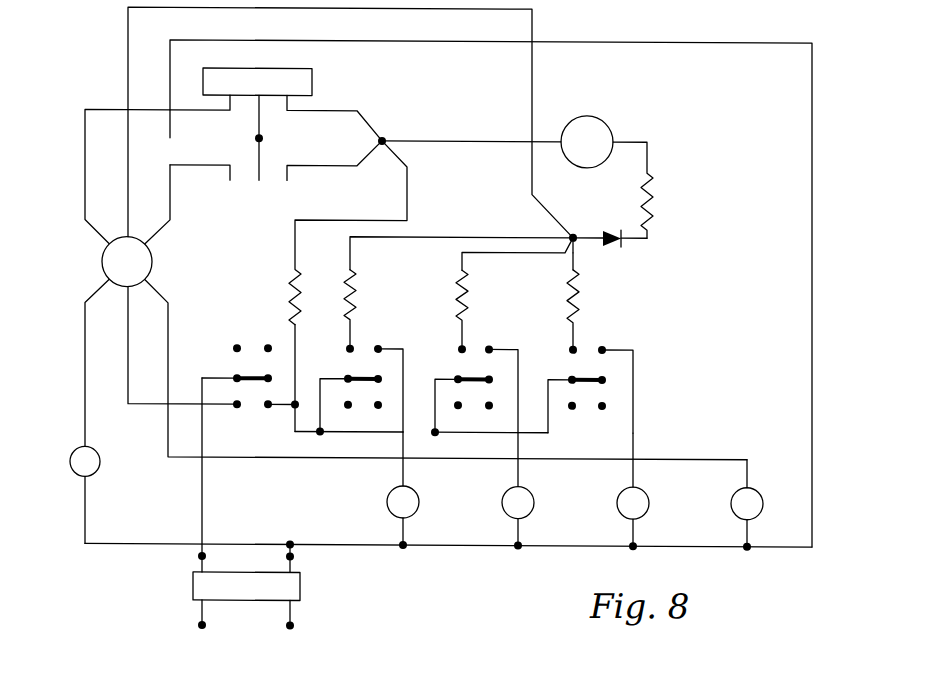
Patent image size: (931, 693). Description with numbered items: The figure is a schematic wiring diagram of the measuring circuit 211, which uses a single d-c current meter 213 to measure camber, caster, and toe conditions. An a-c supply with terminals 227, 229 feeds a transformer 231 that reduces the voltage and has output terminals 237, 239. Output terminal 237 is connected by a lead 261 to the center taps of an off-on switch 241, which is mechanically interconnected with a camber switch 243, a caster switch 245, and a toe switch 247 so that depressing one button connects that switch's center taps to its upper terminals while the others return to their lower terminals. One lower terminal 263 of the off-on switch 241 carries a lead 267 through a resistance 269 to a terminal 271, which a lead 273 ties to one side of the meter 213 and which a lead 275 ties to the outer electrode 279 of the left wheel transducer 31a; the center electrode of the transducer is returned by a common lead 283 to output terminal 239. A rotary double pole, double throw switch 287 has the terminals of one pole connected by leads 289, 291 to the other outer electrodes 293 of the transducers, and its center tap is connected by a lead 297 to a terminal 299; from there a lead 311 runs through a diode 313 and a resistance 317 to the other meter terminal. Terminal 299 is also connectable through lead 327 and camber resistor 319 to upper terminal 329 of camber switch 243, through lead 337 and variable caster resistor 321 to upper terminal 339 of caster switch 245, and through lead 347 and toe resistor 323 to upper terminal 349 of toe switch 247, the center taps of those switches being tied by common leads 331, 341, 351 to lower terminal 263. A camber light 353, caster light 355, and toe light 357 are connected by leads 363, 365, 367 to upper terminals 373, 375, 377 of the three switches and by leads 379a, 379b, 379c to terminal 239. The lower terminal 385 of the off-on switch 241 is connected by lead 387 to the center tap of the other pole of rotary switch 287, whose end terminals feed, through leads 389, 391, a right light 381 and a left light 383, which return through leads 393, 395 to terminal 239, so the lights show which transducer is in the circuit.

The circuit 211 is at (453, 559).
The d-c current meter 213 is at (601, 127).
The terminal 227 is at (202, 625).
The terminal 229 is at (294, 624).
The transformer 231 is at (265, 582).
The output terminal 237 is at (200, 555).
The output terminal 239 is at (294, 555).
The off-on switch 241 is at (255, 412).
The camber switch 243 is at (364, 418).
The caster switch 245 is at (474, 418).
The toe switch 247 is at (600, 414).
The lead 261 is at (202, 491).
The lower terminal 263 is at (268, 407).
The lead 267 is at (295, 331).
The resistance 269 is at (295, 276).
The terminal 271 is at (385, 136).
The lead 273 is at (504, 140).
The lead 275 is at (329, 110).
The outer electrode 279 is at (287, 104).
The conductor 283 is at (262, 39).
The rotary double pole, double throw switch 287 is at (96, 268).
The lead 289 is at (85, 178).
The lead 291 is at (170, 225).
The outer electrode 293 is at (228, 100).
The lead 297 is at (128, 48).
The terminal 299 is at (576, 233).
The lead 311 is at (582, 250).
The diode 313 is at (611, 246).
The resistance 317 is at (651, 193).
The camber resistor 319 is at (352, 287).
The caster resistor 321 is at (468, 285).
The toe resistor 323 is at (578, 300).
The lead 327 is at (411, 235).
The upper terminal 329 is at (352, 345).
The common lead 331 is at (320, 388).
The lead 337 is at (490, 250).
The upper terminal 339 is at (464, 345).
The common lead 341 is at (435, 388).
The lead 347 is at (572, 256).
The upper terminal 349 is at (575, 345).
The common lead 351 is at (548, 428).
The camber light 353 is at (387, 499).
The caster light 355 is at (534, 499).
The toe light 357 is at (649, 499).
The lead 363 is at (403, 466).
The lead 365 is at (518, 473).
The lead 367 is at (633, 471).
The upper terminal 373 is at (380, 345).
The upper terminal 375 is at (491, 345).
The upper terminal 377 is at (604, 345).
The lead 379a is at (403, 532).
The lead 379b is at (518, 543).
The lead 379c is at (633, 543).
The right light 381 is at (763, 499).
The left light 383 is at (74, 471).
The lower terminal 385 is at (237, 407).
The lead 387 is at (128, 324).
The lead 389 is at (168, 312).
The lead 391 is at (85, 356).
The lead 393 is at (747, 543).
The lead 395 is at (85, 543).
The left wheel transducer 31a is at (298, 66).